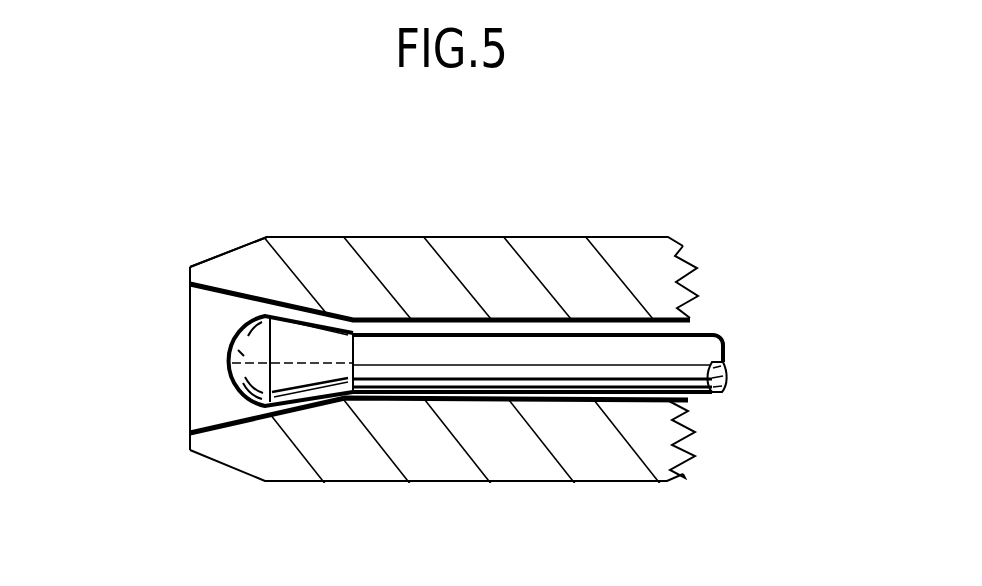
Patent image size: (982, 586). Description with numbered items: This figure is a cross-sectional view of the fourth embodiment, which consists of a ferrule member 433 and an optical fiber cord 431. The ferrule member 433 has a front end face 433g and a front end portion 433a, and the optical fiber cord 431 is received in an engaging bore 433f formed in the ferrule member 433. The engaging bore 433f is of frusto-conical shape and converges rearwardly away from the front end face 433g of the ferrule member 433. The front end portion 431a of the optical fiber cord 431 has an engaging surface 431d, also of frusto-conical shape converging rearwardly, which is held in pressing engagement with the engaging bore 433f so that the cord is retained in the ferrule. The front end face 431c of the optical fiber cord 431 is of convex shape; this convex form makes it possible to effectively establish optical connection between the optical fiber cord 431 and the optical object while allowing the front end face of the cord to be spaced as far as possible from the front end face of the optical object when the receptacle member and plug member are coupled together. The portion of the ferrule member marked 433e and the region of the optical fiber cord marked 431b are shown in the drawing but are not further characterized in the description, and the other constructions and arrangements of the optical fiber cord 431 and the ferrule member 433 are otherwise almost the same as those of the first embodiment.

The ferrule member 433 is at (548, 232).
The front end portion of the ferrule member 433a is at (246, 244).
The ferrule body (broken away) 433e is at (657, 263).
The engaging bore 433f is at (236, 294).
The front end face of the ferrule member 433g is at (188, 268).
The optical fiber cord 431 is at (692, 329).
The front end portion of the optical fiber cord 431a is at (232, 365).
The rear end of optical fiber 431b is at (727, 371).
The front end face of the optical fiber cord 431c is at (238, 386).
The engaging surface 431d is at (340, 403).